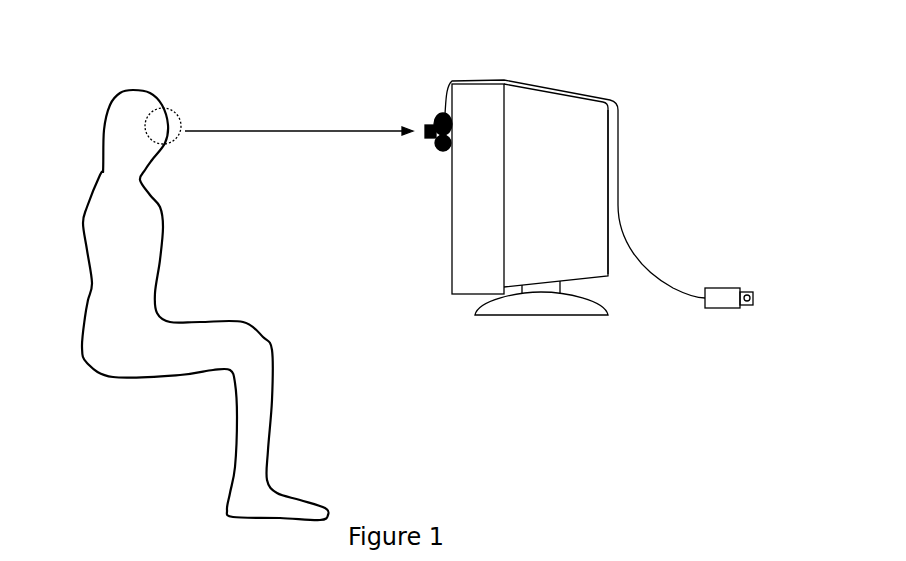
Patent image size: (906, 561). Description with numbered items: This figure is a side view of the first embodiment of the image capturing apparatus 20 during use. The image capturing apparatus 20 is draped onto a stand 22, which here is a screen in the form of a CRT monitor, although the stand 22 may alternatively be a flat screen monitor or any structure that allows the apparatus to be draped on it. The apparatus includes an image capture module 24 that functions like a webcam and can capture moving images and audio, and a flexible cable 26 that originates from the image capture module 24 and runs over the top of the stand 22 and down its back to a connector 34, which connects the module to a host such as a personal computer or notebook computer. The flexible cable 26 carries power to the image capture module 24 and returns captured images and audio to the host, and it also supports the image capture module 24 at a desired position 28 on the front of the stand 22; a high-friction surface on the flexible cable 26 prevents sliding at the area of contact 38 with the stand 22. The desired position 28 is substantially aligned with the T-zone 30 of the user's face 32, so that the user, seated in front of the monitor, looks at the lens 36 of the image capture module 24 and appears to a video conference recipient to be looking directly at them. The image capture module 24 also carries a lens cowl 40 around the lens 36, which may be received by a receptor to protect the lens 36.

The image capturing apparatus 20 is at (640, 263).
The stand 22 is at (518, 200).
The image capture module 24 is at (440, 152).
The flexible cable 26 is at (622, 170).
The desired position 28 is at (440, 113).
The T-zone 30 is at (183, 117).
The user's face 32 is at (122, 135).
The connector 34 is at (727, 298).
The lens 36 is at (423, 135).
The area of contact 38 is at (458, 80).
The lens cowl 40 is at (377, 123).